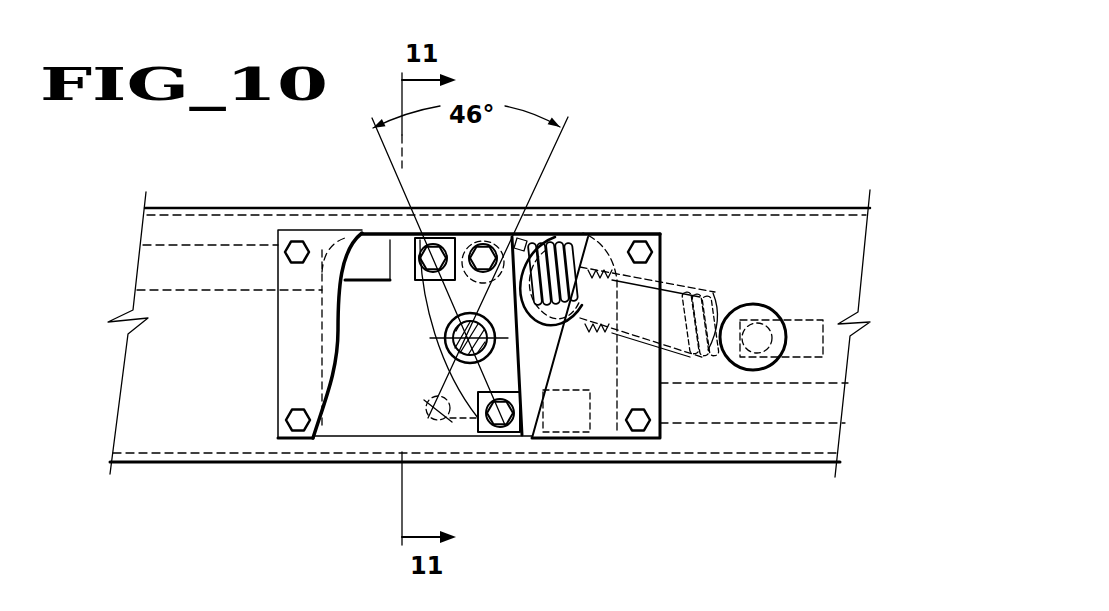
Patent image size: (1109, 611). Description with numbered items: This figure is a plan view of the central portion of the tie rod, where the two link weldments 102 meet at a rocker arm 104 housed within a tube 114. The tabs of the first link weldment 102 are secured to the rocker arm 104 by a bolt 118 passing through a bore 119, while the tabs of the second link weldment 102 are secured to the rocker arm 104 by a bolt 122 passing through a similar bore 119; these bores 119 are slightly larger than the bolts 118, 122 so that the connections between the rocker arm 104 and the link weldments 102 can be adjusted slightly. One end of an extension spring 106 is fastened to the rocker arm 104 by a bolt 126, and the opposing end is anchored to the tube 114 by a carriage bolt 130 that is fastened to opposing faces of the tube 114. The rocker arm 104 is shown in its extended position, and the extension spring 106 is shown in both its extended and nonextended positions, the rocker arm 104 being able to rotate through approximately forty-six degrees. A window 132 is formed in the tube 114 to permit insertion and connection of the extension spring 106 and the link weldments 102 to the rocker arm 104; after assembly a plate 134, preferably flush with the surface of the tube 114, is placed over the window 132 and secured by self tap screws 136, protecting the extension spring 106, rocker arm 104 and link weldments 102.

The link weldment 102 is at (167, 247).
The rocker arm 104 is at (428, 348).
The extension spring 106 is at (565, 232).
The tube 114 is at (680, 463).
The bolt 118 is at (420, 240).
The bore 119 is at (420, 270).
The bolt 122 is at (503, 427).
The bolt 126 is at (488, 235).
The carriage bolt 130 is at (767, 305).
The window 132 is at (330, 418).
The plate 134 is at (278, 338).
The self tap screw 136 is at (295, 240).